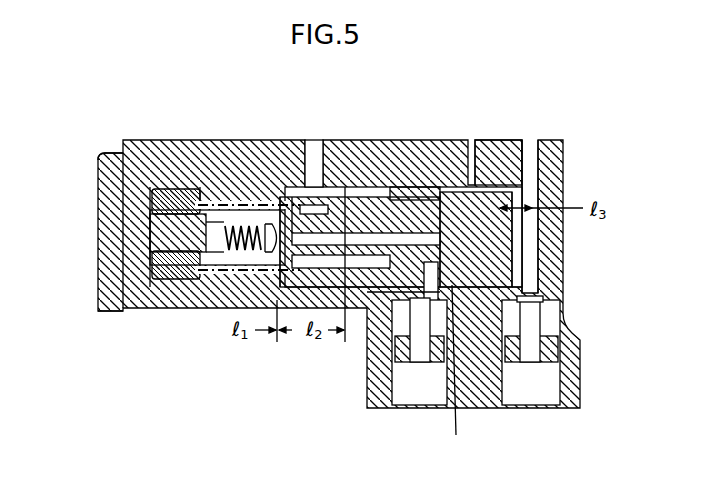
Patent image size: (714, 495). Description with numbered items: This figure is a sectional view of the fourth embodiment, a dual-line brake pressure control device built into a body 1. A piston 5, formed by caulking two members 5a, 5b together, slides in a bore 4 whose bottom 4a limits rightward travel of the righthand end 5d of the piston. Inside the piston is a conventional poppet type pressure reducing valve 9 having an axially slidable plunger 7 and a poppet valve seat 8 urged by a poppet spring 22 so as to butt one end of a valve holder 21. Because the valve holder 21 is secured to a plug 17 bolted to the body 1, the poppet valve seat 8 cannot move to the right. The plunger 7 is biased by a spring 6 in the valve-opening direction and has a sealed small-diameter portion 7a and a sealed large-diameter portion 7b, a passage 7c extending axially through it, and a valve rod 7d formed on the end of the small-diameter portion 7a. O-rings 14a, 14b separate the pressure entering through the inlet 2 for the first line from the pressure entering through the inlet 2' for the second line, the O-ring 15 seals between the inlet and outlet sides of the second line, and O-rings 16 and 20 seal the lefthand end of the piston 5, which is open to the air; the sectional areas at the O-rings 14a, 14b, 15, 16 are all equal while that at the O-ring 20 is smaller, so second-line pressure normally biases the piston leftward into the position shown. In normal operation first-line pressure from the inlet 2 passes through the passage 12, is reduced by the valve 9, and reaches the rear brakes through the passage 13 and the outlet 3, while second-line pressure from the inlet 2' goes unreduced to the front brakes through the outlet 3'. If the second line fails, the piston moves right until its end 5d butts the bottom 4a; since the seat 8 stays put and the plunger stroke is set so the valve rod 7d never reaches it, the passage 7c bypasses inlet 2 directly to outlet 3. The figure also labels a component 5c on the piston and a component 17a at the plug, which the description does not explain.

The body 1 is at (550, 292).
The inlet for the first line 2 is at (316, 138).
The inlet for the second line 2' is at (552, 191).
The outlet 3 is at (419, 379).
The outlet 3' is at (531, 378).
The bore 4 is at (512, 177).
The bottom of the bore 4a is at (520, 232).
The piston 5 is at (238, 183).
The member 5a is at (412, 185).
The member 5b is at (163, 182).
The seal 5c is at (165, 200).
The righthand end 5d is at (517, 263).
The spring 6 is at (203, 183).
The plunger 7 is at (372, 185).
The small-diameter portion 7a is at (303, 313).
The large-diameter portion 7b is at (395, 295).
The passage 7c is at (347, 185).
The valve rod 7d is at (268, 185).
The poppet valve seat 8 is at (233, 310).
The poppet type pressure reducing valve 9 is at (265, 310).
The passage 12 is at (297, 185).
The passage 13 is at (463, 373).
The O-ring 14a is at (492, 177).
The O-ring 14b is at (443, 180).
The O-ring 15 is at (343, 347).
The O-ring 16 is at (205, 313).
The plug 17 is at (100, 310).
The seal 17a is at (160, 268).
The O-ring 20 is at (150, 233).
The valve holder 21 is at (200, 300).
The poppet spring 22 is at (127, 323).